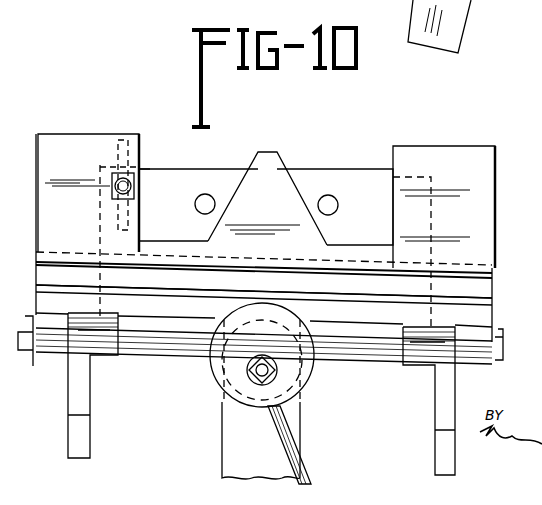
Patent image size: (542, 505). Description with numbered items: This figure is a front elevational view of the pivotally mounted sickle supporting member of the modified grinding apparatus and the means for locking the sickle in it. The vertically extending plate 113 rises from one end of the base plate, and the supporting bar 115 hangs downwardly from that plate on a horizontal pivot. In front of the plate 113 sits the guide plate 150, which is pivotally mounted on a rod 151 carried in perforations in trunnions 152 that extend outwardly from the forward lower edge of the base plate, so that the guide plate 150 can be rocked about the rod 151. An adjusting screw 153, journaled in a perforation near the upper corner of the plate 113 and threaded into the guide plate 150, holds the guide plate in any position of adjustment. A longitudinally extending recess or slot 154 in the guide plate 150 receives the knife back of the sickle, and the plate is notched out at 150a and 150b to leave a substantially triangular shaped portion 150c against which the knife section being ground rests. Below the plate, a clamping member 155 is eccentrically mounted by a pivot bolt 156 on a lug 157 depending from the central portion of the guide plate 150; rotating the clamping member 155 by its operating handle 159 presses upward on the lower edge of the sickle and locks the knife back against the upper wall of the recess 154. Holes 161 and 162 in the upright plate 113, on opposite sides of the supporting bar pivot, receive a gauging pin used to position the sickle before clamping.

The vertically extending plate 113 is at (141, 176).
The supporting bar 115 is at (240, 425).
The guide plate 150 is at (485, 168).
The notch 150a is at (240, 164).
The notch 150b is at (354, 164).
The substantially triangular shaped portion 150c is at (266, 195).
The rod 151 is at (499, 347).
The trunnions 152 is at (110, 330).
The adjusting screw 153 is at (114, 140).
The recess or slot 154 is at (483, 292).
The clamping member 155 is at (313, 389).
The pivot bolt 156 is at (255, 373).
The lug 157 is at (236, 381).
The operating handle 159 is at (298, 474).
The hole 161 is at (196, 205).
The hole 162 is at (338, 205).